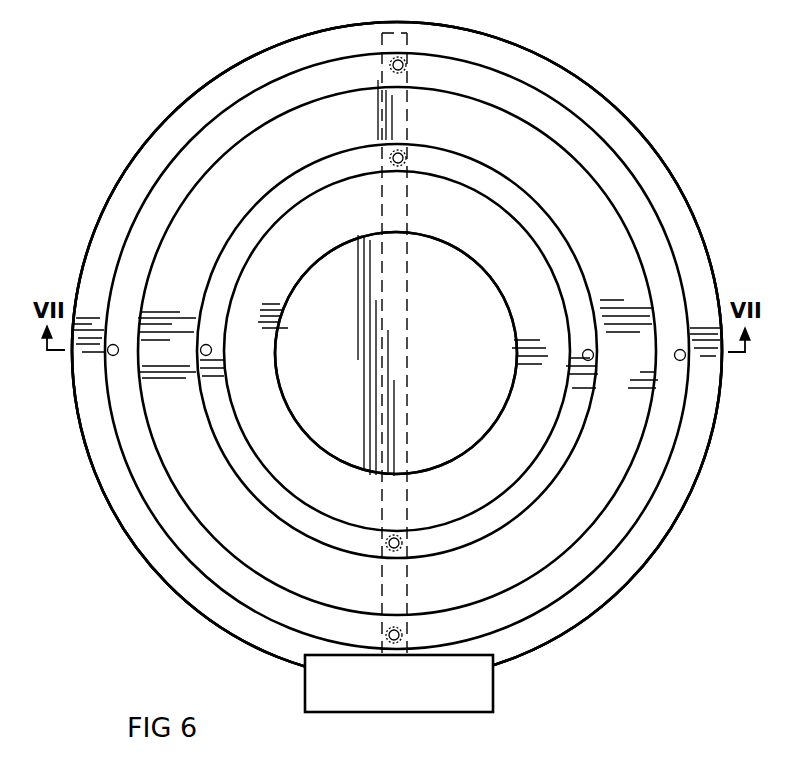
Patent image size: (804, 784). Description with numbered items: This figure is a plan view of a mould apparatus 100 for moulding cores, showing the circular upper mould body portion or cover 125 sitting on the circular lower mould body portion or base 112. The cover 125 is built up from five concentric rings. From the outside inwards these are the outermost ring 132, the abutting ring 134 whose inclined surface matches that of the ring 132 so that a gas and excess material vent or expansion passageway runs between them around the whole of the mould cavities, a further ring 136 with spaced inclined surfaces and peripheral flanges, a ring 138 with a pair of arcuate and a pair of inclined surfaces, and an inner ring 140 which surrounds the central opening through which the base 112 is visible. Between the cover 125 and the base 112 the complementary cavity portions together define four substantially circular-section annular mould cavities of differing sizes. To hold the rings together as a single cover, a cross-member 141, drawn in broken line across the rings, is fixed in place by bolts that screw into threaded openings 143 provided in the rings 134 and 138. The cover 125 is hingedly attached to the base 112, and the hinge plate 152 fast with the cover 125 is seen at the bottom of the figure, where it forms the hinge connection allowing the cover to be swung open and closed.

The mould apparatus 100 is at (668, 82).
The lower mould body portion or base 112 is at (463, 363).
The upper mould body portion or cover 125 is at (555, 53).
The outermost ring 132 is at (193, 110).
The abutting ring 134 is at (183, 163).
The further ring 136 is at (190, 213).
The ring 138 is at (230, 250).
The inner ring 140 is at (270, 428).
The cross-member 141 is at (385, 278).
The threaded openings 143 is at (404, 65).
The hinge plate 152 is at (475, 693).